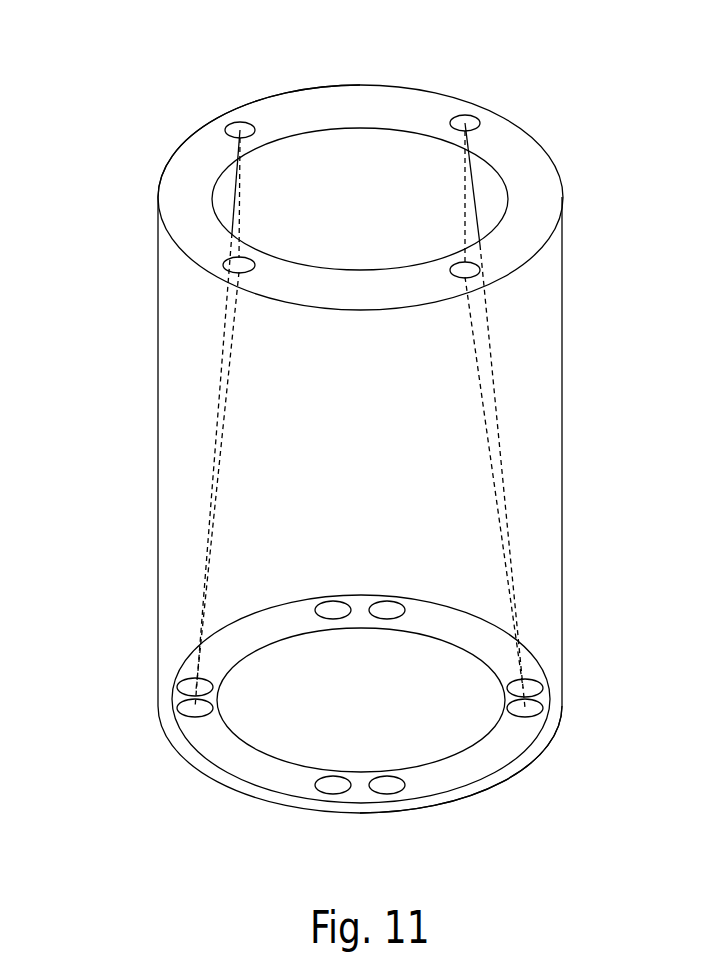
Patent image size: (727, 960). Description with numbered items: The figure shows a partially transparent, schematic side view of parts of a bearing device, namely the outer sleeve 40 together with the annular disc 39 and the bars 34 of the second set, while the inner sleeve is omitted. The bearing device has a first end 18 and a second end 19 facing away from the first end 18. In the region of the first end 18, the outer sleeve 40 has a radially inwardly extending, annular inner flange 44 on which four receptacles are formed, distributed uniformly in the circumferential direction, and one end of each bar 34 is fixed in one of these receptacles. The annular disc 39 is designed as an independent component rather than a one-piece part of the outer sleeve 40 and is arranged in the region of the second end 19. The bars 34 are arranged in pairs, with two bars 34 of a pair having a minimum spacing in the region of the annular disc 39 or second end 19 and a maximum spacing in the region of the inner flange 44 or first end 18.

The first end 18 is at (153, 143).
The second end 19 is at (563, 785).
The bar 34 is at (237, 198).
The annular disc 39 is at (238, 760).
The outer sleeve 40 is at (563, 422).
The inner flange 44 is at (527, 183).